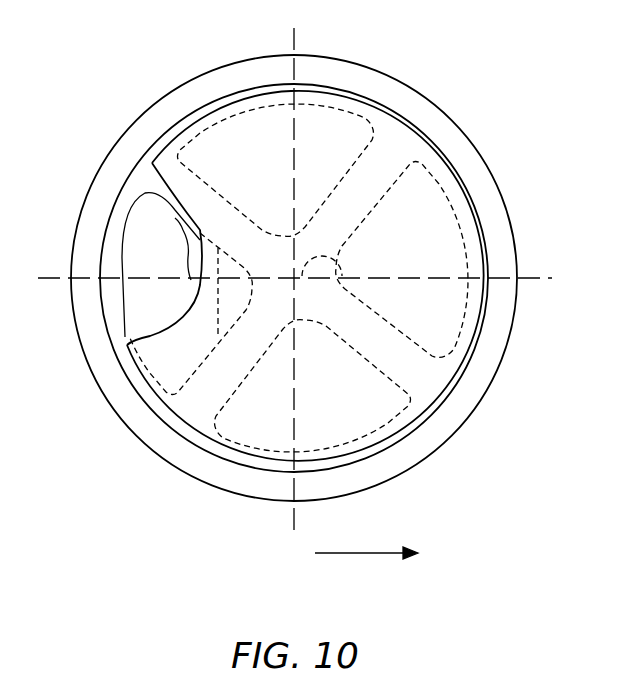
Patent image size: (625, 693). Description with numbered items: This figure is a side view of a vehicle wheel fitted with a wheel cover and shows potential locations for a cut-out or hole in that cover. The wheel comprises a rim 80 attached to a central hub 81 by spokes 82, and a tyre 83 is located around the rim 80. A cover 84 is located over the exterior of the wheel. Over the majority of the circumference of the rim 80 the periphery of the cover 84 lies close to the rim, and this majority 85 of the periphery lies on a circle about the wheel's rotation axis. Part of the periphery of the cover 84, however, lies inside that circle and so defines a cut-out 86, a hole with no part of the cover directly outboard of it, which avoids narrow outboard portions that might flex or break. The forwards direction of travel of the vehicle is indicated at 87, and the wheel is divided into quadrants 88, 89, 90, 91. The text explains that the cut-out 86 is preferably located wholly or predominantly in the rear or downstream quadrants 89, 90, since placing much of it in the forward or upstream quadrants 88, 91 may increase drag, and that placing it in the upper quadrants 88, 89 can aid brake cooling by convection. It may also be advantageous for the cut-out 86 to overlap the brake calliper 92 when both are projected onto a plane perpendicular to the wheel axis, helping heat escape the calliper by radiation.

The rim 80 is at (113, 230).
The hub 81 is at (348, 270).
The spokes 82 is at (388, 157).
The tyre 83 is at (105, 180).
The cover 84 is at (436, 310).
The majority of the periphery of the cover 85 is at (245, 97).
The cut-out 86 is at (130, 324).
The forwards direction of travel 87 is at (370, 556).
The quadrant 88 is at (515, 84).
The quadrant 89 is at (102, 84).
The quadrant 90 is at (102, 491).
The quadrant 91 is at (515, 491).
The brake calliper 92 is at (172, 310).